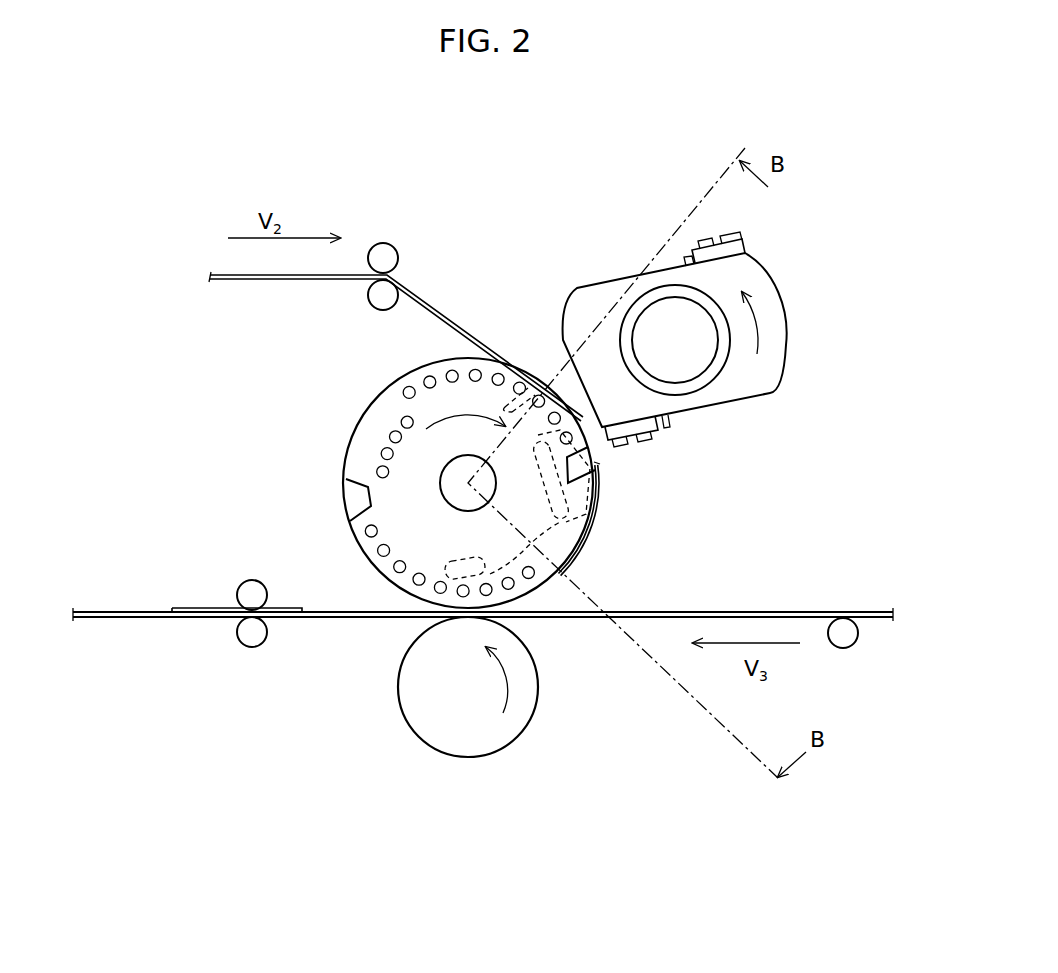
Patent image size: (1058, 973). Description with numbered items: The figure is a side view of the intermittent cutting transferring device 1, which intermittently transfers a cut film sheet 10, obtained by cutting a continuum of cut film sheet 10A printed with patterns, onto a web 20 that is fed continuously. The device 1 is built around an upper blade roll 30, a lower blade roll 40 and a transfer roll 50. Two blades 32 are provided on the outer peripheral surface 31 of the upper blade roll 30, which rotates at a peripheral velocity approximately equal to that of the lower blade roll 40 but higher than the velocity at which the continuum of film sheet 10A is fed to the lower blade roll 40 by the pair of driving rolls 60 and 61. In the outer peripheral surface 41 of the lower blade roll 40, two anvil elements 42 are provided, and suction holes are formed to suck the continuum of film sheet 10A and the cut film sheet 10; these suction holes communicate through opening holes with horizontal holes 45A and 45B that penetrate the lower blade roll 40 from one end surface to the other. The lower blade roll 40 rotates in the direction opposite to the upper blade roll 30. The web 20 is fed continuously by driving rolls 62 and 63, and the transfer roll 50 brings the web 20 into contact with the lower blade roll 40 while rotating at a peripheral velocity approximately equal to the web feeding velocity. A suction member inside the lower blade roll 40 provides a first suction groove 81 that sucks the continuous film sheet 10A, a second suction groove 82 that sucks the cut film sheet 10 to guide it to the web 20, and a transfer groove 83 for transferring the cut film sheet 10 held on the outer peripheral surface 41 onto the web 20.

The intermittent cutting transferring device 1 is at (91, 227).
The cut film sheet 10 is at (597, 506).
The continuum of cut film sheet 10A is at (440, 308).
The web 20 is at (740, 611).
The upper blade roll 30 is at (703, 346).
The outer peripheral surface 31 is at (626, 282).
The blade 32 is at (746, 242).
The lower blade roll 40 is at (341, 403).
The outer peripheral surface 41 is at (382, 392).
The anvil element 42 is at (352, 496).
The horizontal hole 45A is at (497, 378).
The horizontal hole 45B is at (385, 455).
The transfer roll 50 is at (438, 736).
The driving roll 60 is at (384, 258).
The driving roll 61 is at (382, 297).
The driving roll 62 is at (250, 594).
The driving roll 63 is at (252, 636).
The first suction groove 81 is at (588, 480).
The second suction groove 82 is at (532, 548).
The transfer groove 83 is at (428, 568).